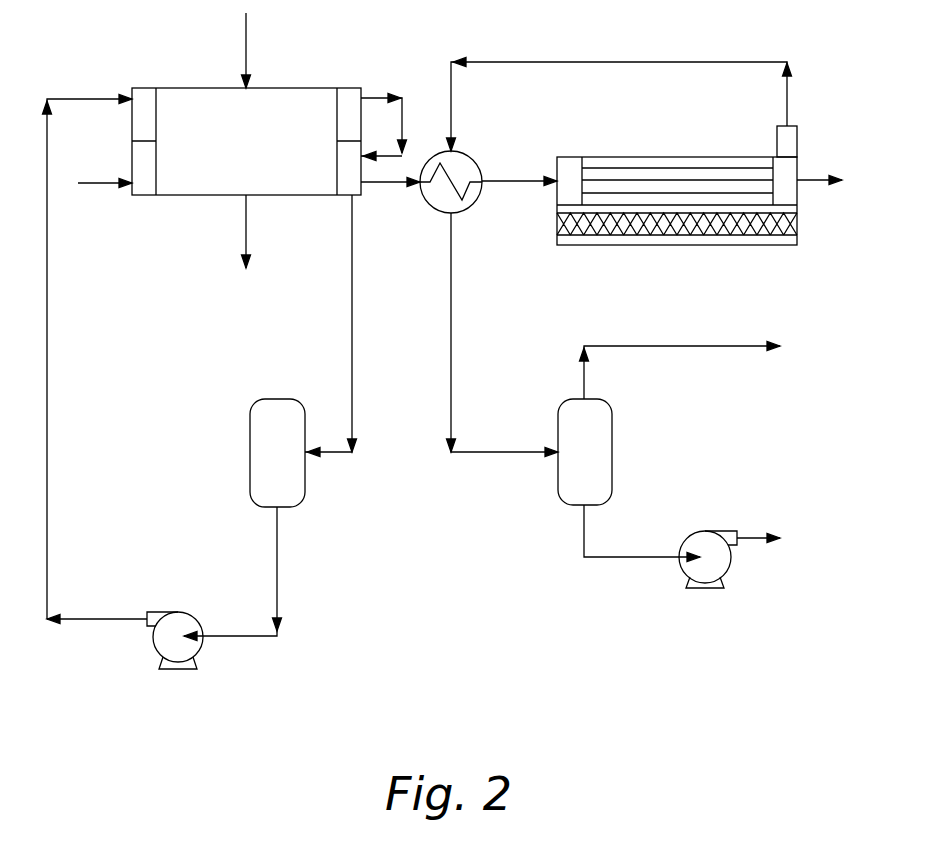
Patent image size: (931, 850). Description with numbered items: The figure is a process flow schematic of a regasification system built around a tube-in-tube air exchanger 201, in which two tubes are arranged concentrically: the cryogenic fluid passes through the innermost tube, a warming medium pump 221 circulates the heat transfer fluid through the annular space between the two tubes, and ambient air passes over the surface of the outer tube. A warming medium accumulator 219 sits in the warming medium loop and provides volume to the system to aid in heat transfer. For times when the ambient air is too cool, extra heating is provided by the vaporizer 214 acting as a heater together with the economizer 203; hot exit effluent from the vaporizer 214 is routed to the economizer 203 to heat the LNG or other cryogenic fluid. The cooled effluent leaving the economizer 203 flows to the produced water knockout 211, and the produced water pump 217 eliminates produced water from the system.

The tube-in-tube air exchanger 201 is at (296, 87).
The economizer 203 is at (476, 152).
The vaporizer 214 is at (675, 157).
The produced water knockout 211 is at (612, 427).
The produced water pump 217 is at (709, 531).
The warming medium accumulator 219 is at (250, 432).
The warming medium pump 221 is at (173, 612).